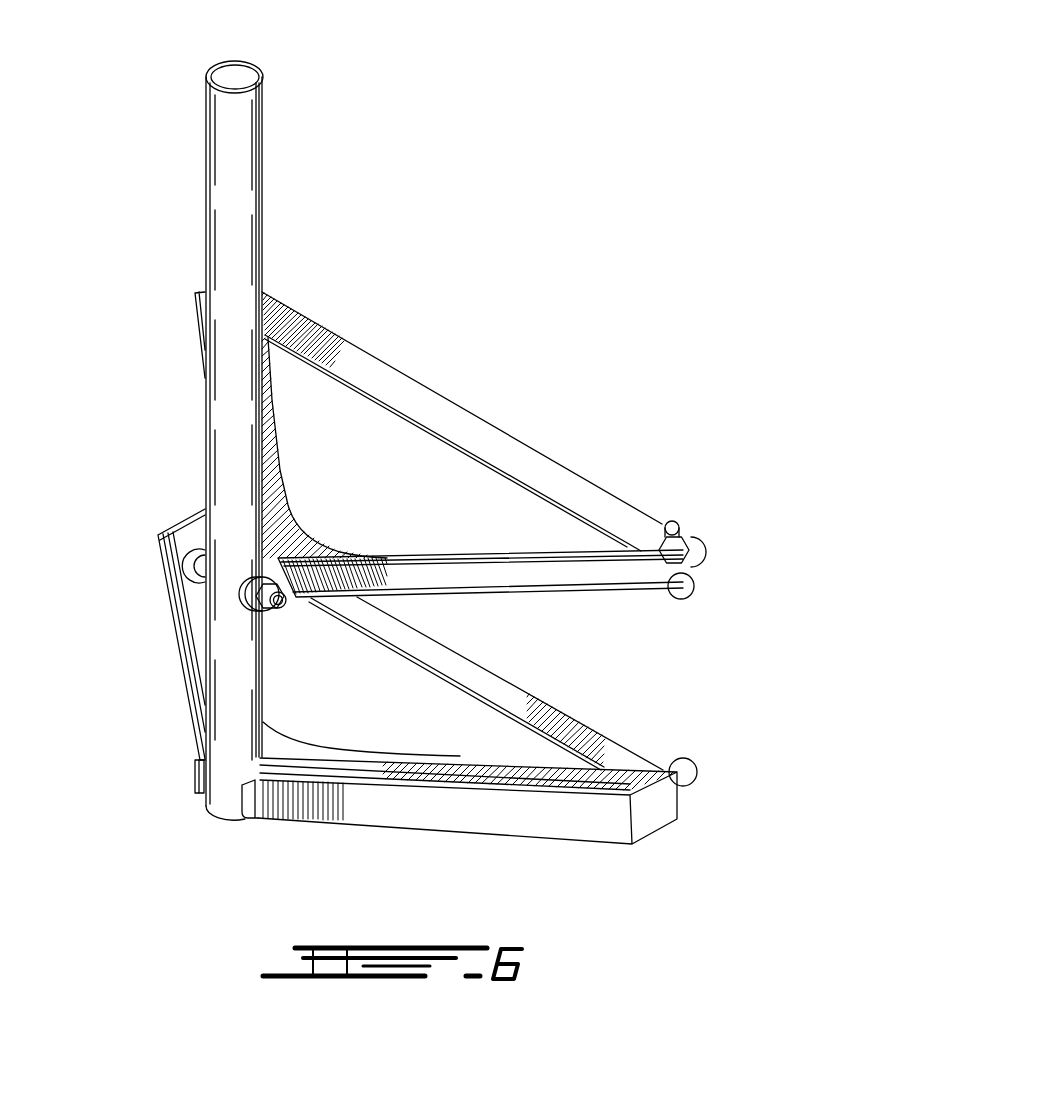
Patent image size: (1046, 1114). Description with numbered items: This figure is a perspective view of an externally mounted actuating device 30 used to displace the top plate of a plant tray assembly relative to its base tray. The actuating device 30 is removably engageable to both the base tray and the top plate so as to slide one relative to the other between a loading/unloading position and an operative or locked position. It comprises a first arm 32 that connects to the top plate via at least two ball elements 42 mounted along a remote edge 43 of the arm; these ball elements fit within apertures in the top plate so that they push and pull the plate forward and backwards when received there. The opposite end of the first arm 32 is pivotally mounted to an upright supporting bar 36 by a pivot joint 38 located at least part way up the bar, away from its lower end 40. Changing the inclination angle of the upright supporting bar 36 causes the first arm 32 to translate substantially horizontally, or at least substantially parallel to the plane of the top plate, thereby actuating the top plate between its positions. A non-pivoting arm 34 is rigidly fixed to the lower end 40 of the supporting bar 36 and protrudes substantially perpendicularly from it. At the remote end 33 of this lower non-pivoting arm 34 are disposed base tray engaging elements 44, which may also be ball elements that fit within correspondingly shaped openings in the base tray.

The actuating device 30 is at (542, 178).
The first arm 32 is at (437, 405).
The remote end 33 is at (512, 680).
The non-pivoting arm 34 is at (617, 745).
The supporting bar 36 is at (210, 157).
The pivot joint 38 is at (183, 590).
The lower end 40 is at (227, 806).
The ball elements 42 is at (680, 593).
The remote edge 43 is at (565, 457).
The base tray engaging elements 44 is at (697, 768).